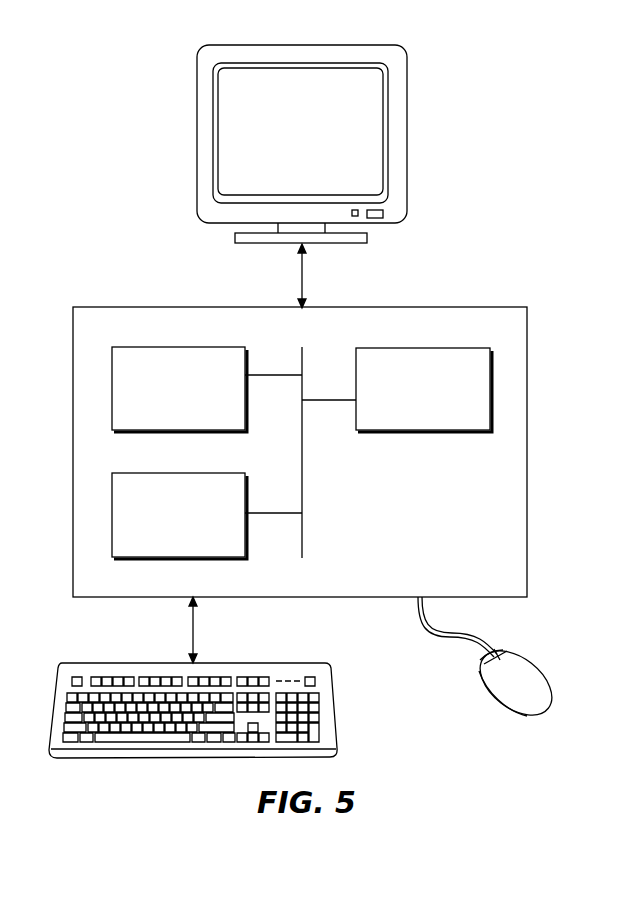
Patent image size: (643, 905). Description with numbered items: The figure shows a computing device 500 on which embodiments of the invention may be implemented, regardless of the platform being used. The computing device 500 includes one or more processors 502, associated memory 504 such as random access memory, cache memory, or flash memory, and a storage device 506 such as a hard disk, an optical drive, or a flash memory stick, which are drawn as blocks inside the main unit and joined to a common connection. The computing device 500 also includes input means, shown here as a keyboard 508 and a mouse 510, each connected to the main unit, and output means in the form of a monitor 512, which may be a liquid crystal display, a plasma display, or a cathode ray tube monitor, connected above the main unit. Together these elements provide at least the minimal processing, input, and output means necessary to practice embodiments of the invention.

The computing device 500 is at (507, 184).
The processor 502 is at (447, 400).
The memory 504 is at (199, 399).
The storage device 506 is at (199, 525).
The keyboard 508 is at (267, 663).
The mouse 510 is at (527, 650).
The monitor 512 is at (322, 143).